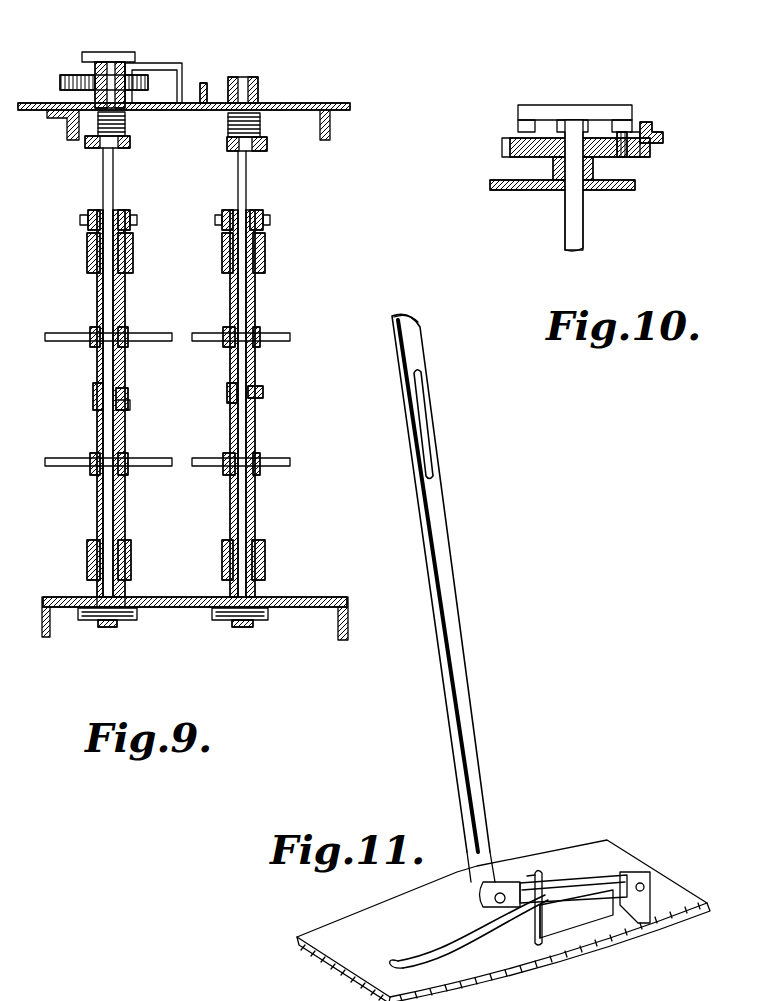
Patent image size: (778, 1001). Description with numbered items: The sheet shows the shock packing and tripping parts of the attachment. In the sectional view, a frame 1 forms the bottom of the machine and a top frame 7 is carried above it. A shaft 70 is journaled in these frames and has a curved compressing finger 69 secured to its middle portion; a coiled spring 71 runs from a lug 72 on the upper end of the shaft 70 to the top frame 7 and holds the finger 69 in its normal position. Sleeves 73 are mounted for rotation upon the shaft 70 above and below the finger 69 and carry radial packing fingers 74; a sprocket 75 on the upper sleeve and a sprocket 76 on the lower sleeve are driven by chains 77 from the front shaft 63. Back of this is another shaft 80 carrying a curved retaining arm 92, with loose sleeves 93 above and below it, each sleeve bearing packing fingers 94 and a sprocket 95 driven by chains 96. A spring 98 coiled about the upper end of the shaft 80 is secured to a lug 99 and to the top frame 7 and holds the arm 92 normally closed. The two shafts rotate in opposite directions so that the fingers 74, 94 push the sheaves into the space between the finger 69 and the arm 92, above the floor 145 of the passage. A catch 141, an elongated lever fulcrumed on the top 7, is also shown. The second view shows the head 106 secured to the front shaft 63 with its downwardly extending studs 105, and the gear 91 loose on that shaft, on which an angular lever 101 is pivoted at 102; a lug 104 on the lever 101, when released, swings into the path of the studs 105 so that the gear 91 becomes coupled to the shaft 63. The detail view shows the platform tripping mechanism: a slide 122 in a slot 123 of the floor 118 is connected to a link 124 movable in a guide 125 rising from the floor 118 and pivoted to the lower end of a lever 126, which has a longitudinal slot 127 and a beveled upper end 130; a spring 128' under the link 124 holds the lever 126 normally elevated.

In FIG. 9, the top frame 7 is at (312, 103).
In FIG. 9, the head 106 is at (110, 50).
In FIG. 10, the head 106 is at (550, 112).
In FIG. 9, the studs 105 is at (85, 60).
In FIG. 10, the studs 105 is at (518, 126).
In FIG. 9, the gear 91 is at (60, 80).
In FIG. 10, the gear 91 is at (502, 148).
In FIG. 9, the catch 141 is at (207, 92).
In FIG. 9, the coiled spring 71 is at (125, 128).
In FIG. 9, the lug 72 is at (115, 143).
In FIG. 9, the shaft 70 is at (112, 390).
In FIG. 9, the sleeves 73 is at (125, 308).
In FIG. 9, the sprocket 75 is at (135, 222).
In FIG. 9, the packing fingers 74 is at (150, 460).
In FIG. 9, the compressing finger 69 is at (95, 405).
In FIG. 9, the frame 1 is at (330, 620).
In FIG. 9, the sprocket 76 is at (85, 621).
In FIG. 9, the chains 77 is at (120, 628).
In FIG. 9, the floor of the passage 145 is at (190, 597).
In FIG. 9, the spring 98 is at (262, 130).
In FIG. 9, the lug 99 is at (243, 146).
In FIG. 9, the shaft 80 is at (245, 440).
In FIG. 9, the sleeves 93 is at (255, 308).
In FIG. 9, the sprockets 95 is at (265, 222).
In FIG. 9, the packing fingers 94 is at (290, 335).
In FIG. 9, the retaining arm 92 is at (255, 392).
In FIG. 9, the chains 96 is at (223, 625).
In FIG. 10, the front shaft 63 is at (575, 224).
In FIG. 10, the lug 104 is at (652, 125).
In FIG. 10, the angular lever 101 is at (663, 137).
In FIG. 10, the pivot 102 is at (622, 158).
In FIG. 11, the lever 126 is at (468, 752).
In FIG. 11, the beveled upper end 130 is at (413, 317).
In FIG. 11, the longitudinal slot 127 is at (430, 450).
In FIG. 11, the floor 118 is at (625, 862).
In FIG. 11, the link 124 is at (570, 876).
In FIG. 11, the guide 125 is at (537, 873).
In FIG. 11, the slide 122 is at (648, 890).
In FIG. 11, the slot 123 is at (605, 940).
In FIG. 11, the spring 128' is at (468, 931).